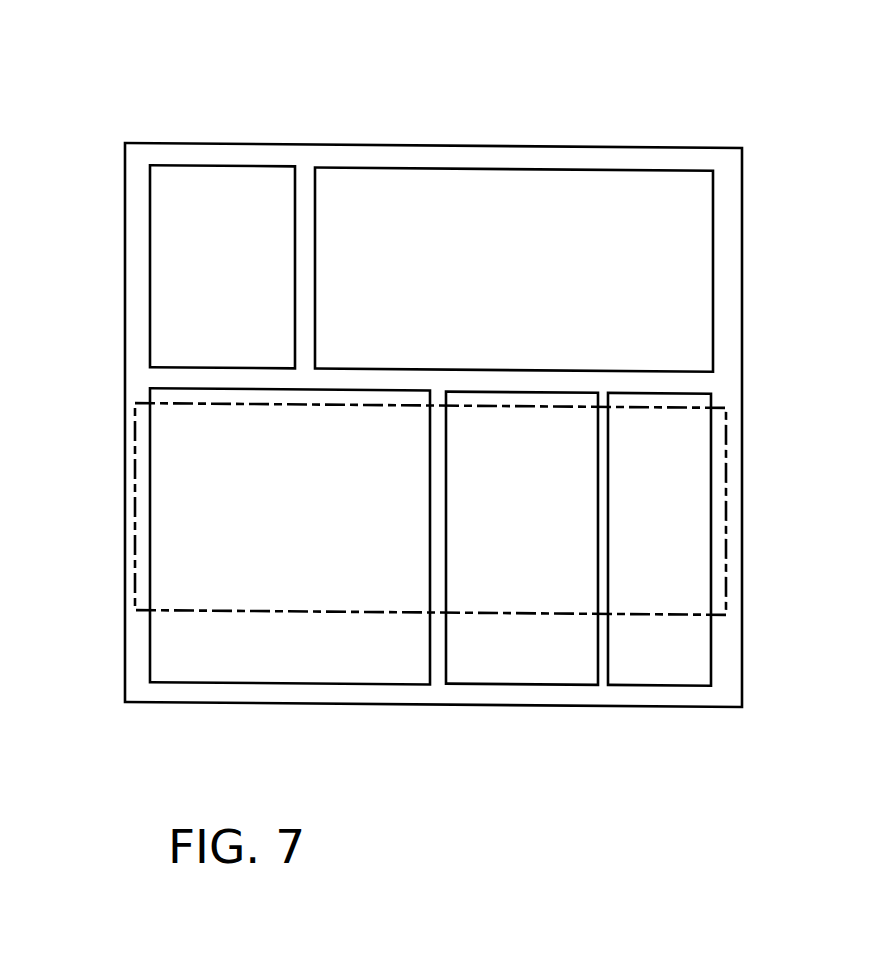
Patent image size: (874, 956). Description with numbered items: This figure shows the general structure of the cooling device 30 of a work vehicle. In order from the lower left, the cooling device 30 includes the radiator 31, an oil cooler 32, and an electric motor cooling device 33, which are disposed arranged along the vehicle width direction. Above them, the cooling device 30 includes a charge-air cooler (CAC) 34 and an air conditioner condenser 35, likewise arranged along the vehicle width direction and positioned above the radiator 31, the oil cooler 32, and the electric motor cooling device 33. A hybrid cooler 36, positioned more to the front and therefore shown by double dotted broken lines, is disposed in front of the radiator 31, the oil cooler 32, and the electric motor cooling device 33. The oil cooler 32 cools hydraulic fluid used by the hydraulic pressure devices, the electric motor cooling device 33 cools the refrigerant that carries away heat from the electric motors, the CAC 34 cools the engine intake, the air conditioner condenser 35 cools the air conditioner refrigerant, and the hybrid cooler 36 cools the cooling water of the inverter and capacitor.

The cooling device 30 is at (708, 148).
The radiator 31 is at (152, 652).
The oil cooler 32 is at (545, 686).
The electric motor cooling device 33 is at (712, 656).
The charge-air cooler (CAC) 34 is at (243, 165).
The air conditioner condenser 35 is at (533, 170).
The hybrid cooler 36 is at (720, 408).